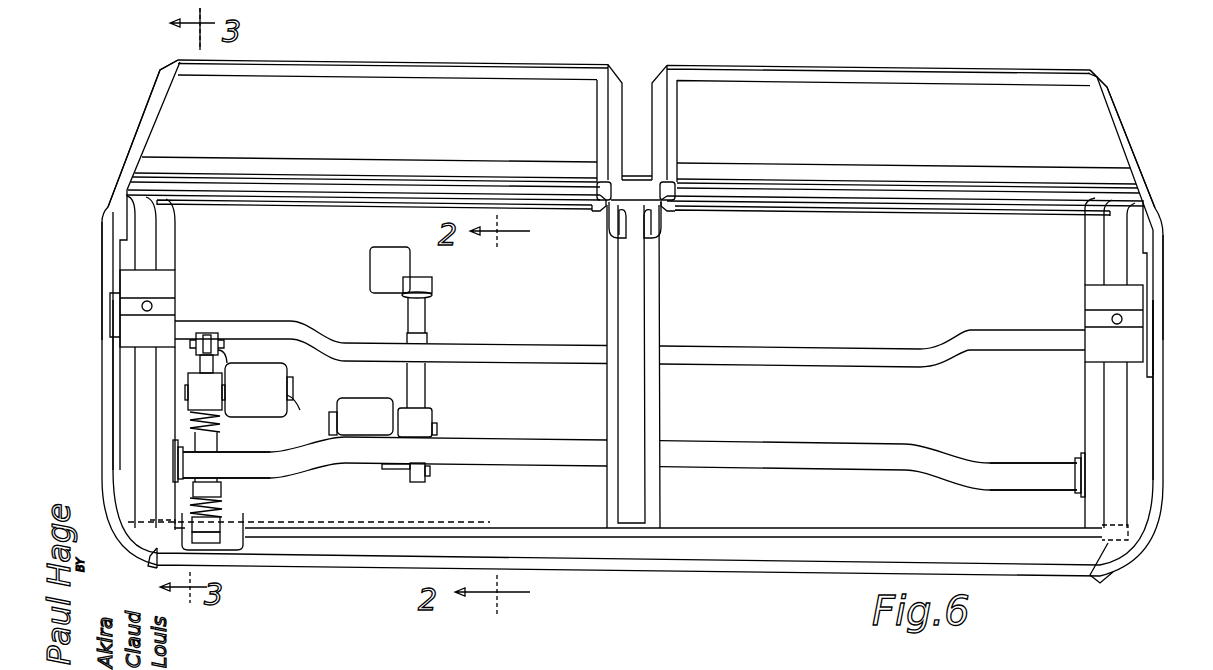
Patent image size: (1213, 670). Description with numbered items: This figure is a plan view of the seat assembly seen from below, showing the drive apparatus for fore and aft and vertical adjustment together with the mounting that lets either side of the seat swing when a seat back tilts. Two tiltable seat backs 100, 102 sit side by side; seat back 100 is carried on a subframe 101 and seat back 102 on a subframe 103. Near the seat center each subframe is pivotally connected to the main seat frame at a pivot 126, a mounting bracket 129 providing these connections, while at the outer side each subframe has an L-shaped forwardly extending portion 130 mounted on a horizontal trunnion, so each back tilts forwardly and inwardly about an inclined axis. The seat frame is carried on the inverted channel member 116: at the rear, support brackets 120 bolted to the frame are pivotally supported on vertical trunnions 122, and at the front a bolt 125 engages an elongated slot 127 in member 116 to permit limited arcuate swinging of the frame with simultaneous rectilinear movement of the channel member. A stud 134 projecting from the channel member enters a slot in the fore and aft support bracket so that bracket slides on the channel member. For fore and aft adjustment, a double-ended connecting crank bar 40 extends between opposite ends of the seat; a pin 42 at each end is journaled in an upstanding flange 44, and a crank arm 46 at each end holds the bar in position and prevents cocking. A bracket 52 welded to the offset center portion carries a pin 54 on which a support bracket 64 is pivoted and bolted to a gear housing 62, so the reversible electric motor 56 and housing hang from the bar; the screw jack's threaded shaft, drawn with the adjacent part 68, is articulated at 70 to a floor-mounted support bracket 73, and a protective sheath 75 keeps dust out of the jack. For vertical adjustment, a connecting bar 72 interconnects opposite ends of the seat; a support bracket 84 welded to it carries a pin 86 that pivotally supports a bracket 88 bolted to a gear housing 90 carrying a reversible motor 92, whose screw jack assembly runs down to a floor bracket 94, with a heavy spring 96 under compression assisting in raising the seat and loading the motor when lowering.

The connecting crank bar 40 is at (565, 466).
The pin 42 is at (176, 470).
The upstanding flange 44 is at (173, 460).
The crank arm 46 is at (1075, 478).
The bracket 52 is at (392, 470).
The pin 54 is at (430, 470).
The reversible electric motor 56 is at (362, 402).
The gear housing 62 is at (437, 422).
The support bracket 64 is at (422, 480).
The upper bar 68 is at (425, 335).
The articulation 70 is at (432, 285).
The connecting bar 72 is at (750, 357).
The support bracket 73 is at (388, 262).
The protective sheath 75 is at (425, 392).
The support bracket 84 is at (208, 335).
The pin 86 is at (225, 346).
The bracket 88 is at (226, 372).
The gear housing 90 is at (212, 412).
The reversible motor 92 is at (262, 400).
The floor bracket 94 is at (235, 545).
The heavy spring 96 is at (222, 500).
The tiltable seat back 100 is at (527, 92).
The subframe 101 is at (150, 110).
The tiltable seat back 102 is at (848, 96).
The subframe 103 is at (1110, 100).
The inverted channel member 116 is at (140, 378).
The support bracket 120 is at (168, 284).
The vertical trunnion 122 is at (142, 306).
The bolt 125 is at (150, 522).
The pivotal connection 126 is at (644, 232).
The elongated slot 127 is at (150, 538).
The mounting bracket 129 is at (650, 240).
The L-shaped forwardly extending portion 130 is at (108, 286).
The stud 134 is at (112, 340).